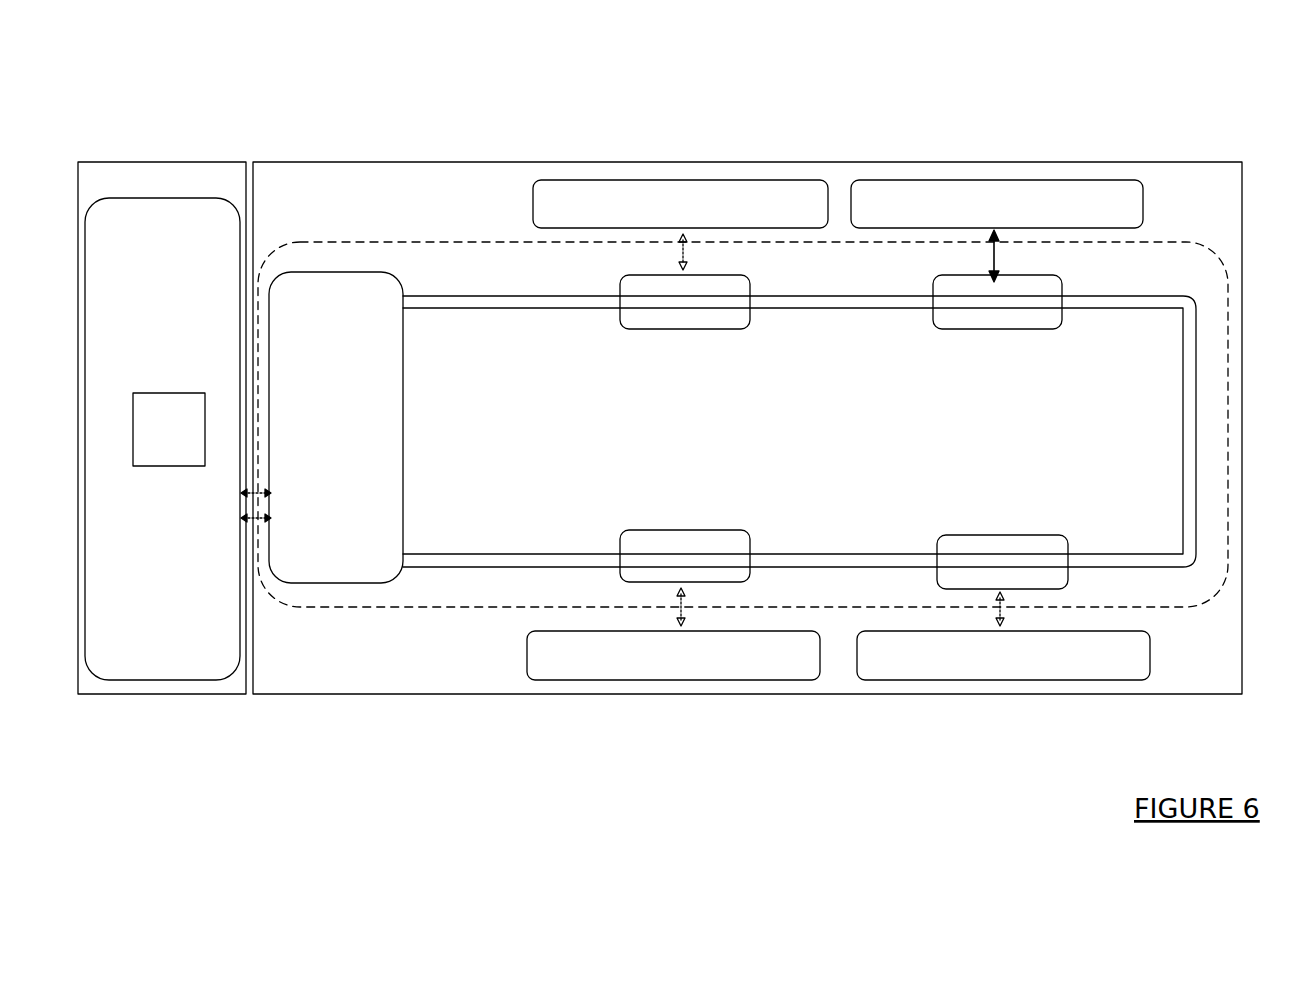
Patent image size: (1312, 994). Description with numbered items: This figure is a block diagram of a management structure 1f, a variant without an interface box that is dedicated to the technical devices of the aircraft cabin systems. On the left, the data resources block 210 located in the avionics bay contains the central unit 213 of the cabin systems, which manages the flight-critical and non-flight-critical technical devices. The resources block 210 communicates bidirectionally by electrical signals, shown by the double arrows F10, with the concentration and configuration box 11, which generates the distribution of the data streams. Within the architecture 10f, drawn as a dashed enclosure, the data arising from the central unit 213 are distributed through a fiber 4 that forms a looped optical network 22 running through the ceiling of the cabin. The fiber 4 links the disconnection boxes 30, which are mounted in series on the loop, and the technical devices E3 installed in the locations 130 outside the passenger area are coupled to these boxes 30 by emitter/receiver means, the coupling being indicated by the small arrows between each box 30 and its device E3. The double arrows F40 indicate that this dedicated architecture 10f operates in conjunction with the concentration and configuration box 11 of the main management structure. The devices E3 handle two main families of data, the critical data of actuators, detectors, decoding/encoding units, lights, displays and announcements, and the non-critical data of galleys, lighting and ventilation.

The management structure 1f is at (757, 128).
The data resources block 210 is at (152, 680).
The central unit of the cabin systems 213 is at (165, 393).
The architecture 10f is at (320, 240).
The fiber 4 is at (482, 560).
The looped optical network 22 is at (450, 284).
The concentration and configuration box 11 is at (328, 583).
The locations 130 is at (682, 180).
The technical devices E3 is at (570, 200).
The disconnection boxes 30 is at (630, 274).
The double arrows F40 is at (993, 253).
The double arrows F10 is at (238, 517).